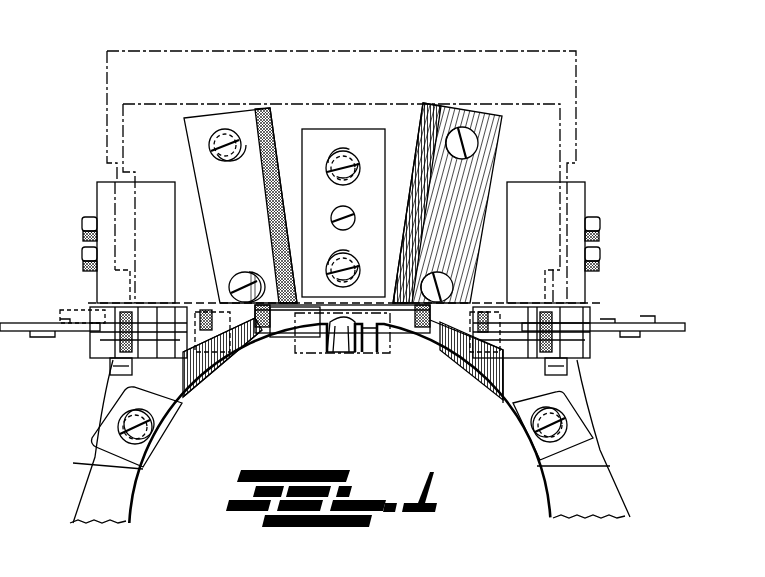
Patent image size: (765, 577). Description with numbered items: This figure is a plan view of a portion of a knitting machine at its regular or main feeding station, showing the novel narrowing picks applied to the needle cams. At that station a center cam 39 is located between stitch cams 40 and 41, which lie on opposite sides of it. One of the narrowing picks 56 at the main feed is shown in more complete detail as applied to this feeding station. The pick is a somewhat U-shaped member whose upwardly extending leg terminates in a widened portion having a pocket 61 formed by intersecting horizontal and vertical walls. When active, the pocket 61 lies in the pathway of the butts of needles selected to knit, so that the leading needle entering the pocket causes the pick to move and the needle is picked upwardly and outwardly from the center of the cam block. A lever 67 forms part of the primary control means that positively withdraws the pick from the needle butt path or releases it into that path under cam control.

The center cam 39 is at (323, 140).
The stitch cam 40 is at (202, 177).
The stitch cam 41 is at (478, 182).
The narrowing pick 56 is at (373, 345).
The pocket 61 is at (346, 347).
The lever 67 is at (643, 333).